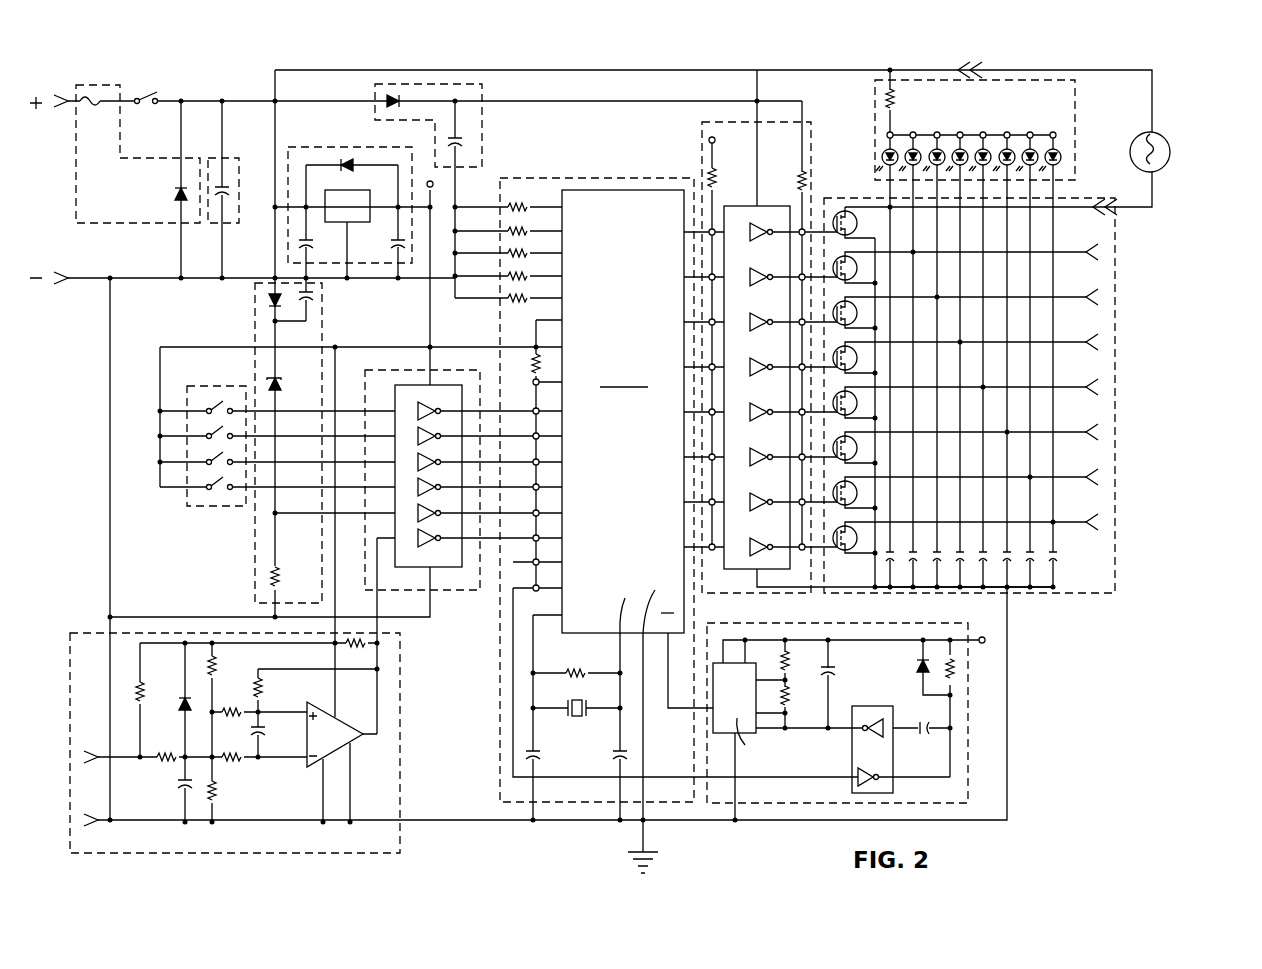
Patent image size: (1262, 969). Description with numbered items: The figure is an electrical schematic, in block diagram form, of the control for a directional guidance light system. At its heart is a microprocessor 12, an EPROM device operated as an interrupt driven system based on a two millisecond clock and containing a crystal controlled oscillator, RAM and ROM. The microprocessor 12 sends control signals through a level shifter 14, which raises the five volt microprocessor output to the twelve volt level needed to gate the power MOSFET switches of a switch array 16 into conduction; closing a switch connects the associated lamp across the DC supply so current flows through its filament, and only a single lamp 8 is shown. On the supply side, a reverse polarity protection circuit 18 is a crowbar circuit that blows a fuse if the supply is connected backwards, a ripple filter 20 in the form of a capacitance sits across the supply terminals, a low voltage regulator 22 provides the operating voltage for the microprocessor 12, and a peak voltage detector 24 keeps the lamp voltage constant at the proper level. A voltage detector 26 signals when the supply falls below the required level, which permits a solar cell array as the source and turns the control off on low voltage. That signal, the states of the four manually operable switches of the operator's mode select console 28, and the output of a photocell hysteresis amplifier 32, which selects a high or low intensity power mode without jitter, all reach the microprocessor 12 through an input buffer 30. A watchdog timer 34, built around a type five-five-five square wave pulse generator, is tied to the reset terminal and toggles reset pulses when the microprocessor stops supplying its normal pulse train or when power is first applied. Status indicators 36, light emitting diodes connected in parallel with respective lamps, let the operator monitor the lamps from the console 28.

The lamp 8 is at (1170, 138).
The microprocessor 12 is at (608, 175).
The level shifter 14 is at (820, 146).
The switch array 16 is at (1117, 393).
The reverse polarity protection circuit 18 is at (94, 86).
The ripple filter 20 is at (241, 172).
The low voltage regulator 22 is at (341, 146).
The peak voltage detector 24 is at (486, 129).
The voltage detector 26 is at (324, 322).
The operator's mode select console 28 is at (210, 507).
The input buffer 30 is at (458, 593).
The photocell hysteresis amplifier 32 is at (248, 856).
The watchdog timer 34 is at (968, 748).
The status indicators 36 is at (1080, 133).